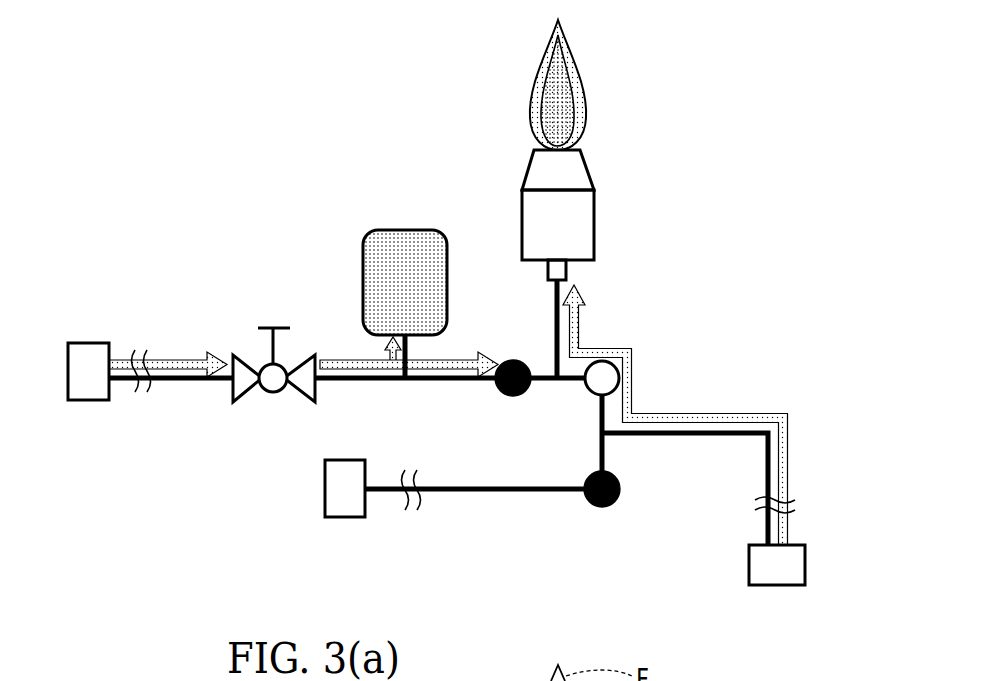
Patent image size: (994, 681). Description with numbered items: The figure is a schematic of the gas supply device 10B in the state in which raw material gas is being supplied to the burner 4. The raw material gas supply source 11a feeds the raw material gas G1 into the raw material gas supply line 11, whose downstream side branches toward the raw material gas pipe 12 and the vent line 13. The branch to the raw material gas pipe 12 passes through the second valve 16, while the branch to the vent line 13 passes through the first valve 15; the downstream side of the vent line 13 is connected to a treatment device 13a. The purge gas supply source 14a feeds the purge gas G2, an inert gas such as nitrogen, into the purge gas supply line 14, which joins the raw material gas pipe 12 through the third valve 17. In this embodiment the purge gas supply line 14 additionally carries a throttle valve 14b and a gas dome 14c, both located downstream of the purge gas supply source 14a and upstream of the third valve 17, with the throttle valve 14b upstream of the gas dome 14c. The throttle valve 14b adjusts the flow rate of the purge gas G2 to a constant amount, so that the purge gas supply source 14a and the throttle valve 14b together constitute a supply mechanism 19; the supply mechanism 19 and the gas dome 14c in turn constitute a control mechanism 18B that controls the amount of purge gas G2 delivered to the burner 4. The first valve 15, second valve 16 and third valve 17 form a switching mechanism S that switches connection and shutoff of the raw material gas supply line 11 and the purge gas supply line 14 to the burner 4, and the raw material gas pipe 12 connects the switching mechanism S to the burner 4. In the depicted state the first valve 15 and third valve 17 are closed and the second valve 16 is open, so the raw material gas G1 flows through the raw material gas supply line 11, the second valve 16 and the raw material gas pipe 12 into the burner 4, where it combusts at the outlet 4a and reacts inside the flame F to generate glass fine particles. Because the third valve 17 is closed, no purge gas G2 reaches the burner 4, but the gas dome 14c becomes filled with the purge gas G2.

The burner 4 is at (582, 225).
The outlet 4a is at (565, 130).
The flame F is at (570, 70).
The gas supply device 10B is at (745, 360).
The raw material gas supply line 11 is at (727, 437).
The raw material gas supply source 11a is at (805, 563).
The raw material gas pipe 12 is at (555, 315).
The vent line 13 is at (512, 492).
The treatment device 13a is at (343, 517).
The purge gas supply line 14 is at (192, 384).
The purge gas supply source 14a is at (93, 343).
The throttle valve 14b is at (250, 355).
The gas dome 14c is at (363, 270).
The first valve 15 is at (602, 507).
The second valve 16 is at (615, 366).
The third valve 17 is at (515, 397).
The control mechanism 18B is at (302, 218).
The supply mechanism 19 is at (247, 268).
The raw material gas G1 is at (789, 440).
The purge gas G2 is at (355, 360).
The switching mechanism S is at (617, 443).